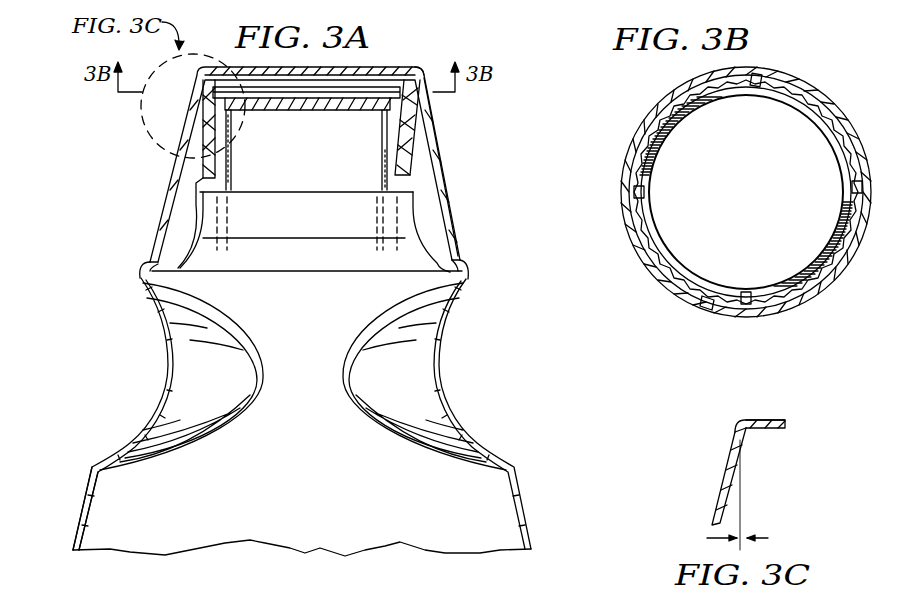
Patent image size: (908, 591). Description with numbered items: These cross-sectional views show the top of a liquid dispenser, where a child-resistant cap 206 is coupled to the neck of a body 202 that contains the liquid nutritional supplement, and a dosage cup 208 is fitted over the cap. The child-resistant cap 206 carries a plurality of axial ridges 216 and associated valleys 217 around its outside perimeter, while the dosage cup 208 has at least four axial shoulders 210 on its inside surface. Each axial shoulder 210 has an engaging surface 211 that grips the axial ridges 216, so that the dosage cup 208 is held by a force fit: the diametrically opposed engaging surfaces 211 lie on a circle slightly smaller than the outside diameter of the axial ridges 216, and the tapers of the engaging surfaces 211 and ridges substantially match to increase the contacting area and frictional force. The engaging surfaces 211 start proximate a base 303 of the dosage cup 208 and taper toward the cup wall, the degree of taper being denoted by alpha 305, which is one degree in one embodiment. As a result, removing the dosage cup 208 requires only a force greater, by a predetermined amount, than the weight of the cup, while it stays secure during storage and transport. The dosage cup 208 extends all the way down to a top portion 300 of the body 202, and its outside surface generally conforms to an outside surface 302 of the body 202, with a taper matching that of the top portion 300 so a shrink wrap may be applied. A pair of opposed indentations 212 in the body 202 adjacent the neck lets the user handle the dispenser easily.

In FIG. 3A, the body 202 is at (532, 512).
In FIG. 3A, the child-resistant cap 206 is at (200, 157).
In FIG. 3B, the child-resistant cap 206 is at (718, 302).
In FIG. 3A, the dosage cup 208 is at (452, 228).
In FIG. 3B, the dosage cup 208 is at (820, 92).
In FIG. 3C, the dosage cup 208 is at (763, 420).
In FIG. 3A, the axial shoulders 210 is at (421, 100).
In FIG. 3B, the axial shoulders 210 is at (756, 72).
In FIG. 3C, the axial shoulders 210 is at (733, 452).
In FIG. 3A, the engaging surfaces 211 is at (411, 66).
In FIG. 3C, the engaging surfaces 211 is at (746, 450).
In FIG. 3A, the opposed indentations 212 is at (440, 370).
In FIG. 3B, the axial ridges 216 is at (663, 122).
In FIG. 3B, the valleys 217 is at (645, 155).
In FIG. 3A, the top portion 300 is at (148, 268).
In FIG. 3A, the outside surface 302 is at (76, 484).
In FIG. 3C, the base 303 is at (772, 430).
In FIG. 3C, the alpha 305 is at (766, 537).